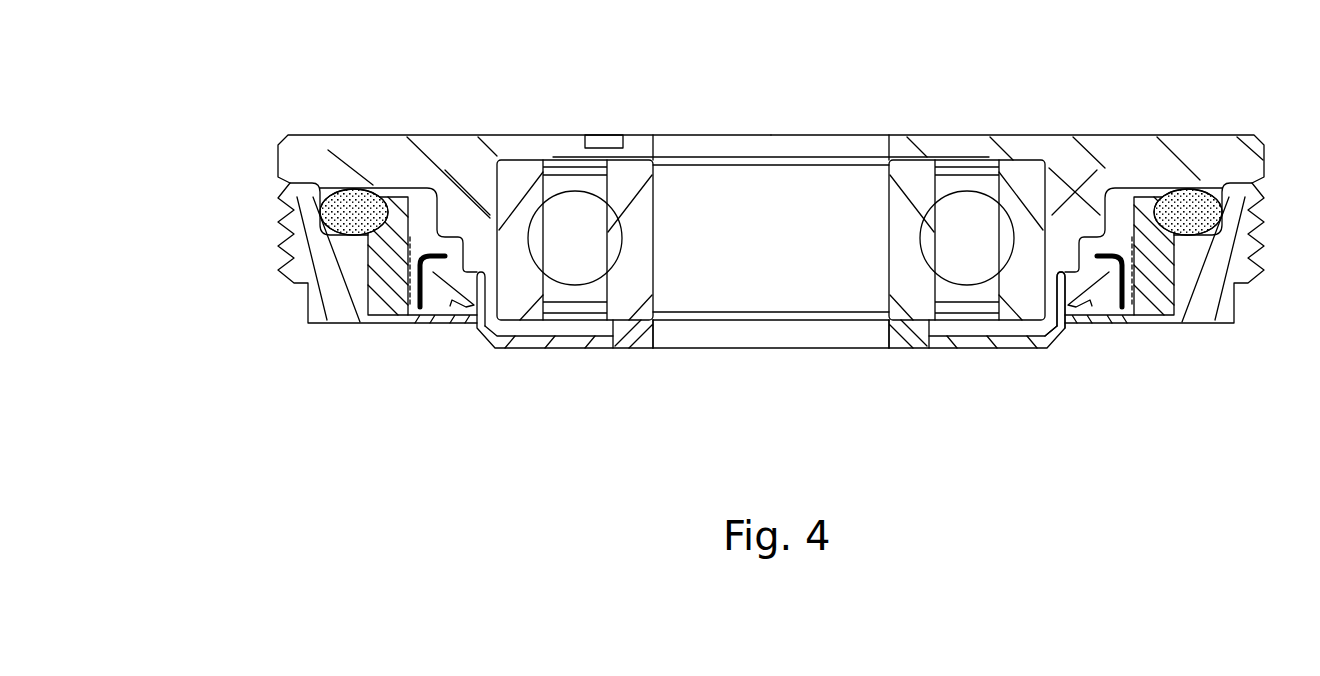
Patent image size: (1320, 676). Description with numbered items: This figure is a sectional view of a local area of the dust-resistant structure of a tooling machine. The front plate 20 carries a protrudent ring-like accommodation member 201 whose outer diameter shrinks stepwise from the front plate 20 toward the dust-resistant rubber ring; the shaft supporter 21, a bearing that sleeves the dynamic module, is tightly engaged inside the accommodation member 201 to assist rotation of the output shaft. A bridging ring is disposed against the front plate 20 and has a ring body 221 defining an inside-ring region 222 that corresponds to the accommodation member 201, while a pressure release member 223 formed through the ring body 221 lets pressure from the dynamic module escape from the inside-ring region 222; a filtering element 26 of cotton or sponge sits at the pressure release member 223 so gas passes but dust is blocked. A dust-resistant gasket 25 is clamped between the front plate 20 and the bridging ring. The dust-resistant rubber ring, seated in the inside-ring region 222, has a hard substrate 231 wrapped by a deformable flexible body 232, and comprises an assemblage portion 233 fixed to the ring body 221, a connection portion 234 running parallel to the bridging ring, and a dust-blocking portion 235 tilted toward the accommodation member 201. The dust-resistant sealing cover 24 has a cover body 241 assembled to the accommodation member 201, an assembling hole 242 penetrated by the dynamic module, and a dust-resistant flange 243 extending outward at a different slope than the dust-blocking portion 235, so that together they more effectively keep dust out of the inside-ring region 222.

The front plate 20 is at (330, 148).
The accommodation member 201 is at (1088, 215).
The shaft supporter 21 is at (515, 175).
The ring body 221 is at (320, 245).
The inside-ring region 222 is at (420, 198).
The pressure release member 223 is at (408, 322).
The dust-resistant sealing cover 24 is at (792, 372).
The cover body 241 is at (637, 330).
The assembling hole 242 is at (873, 342).
The dust-resistant flange 243 is at (1070, 318).
The dust-resistant gasket 25 is at (318, 207).
The filtering element 26 is at (383, 288).
The hard substrate 231 is at (1172, 200).
The flexible body 232 is at (1130, 312).
The assemblage portion 233 is at (1185, 292).
The connection portion 234 is at (1135, 210).
The dust-blocking portion 235 is at (1073, 250).